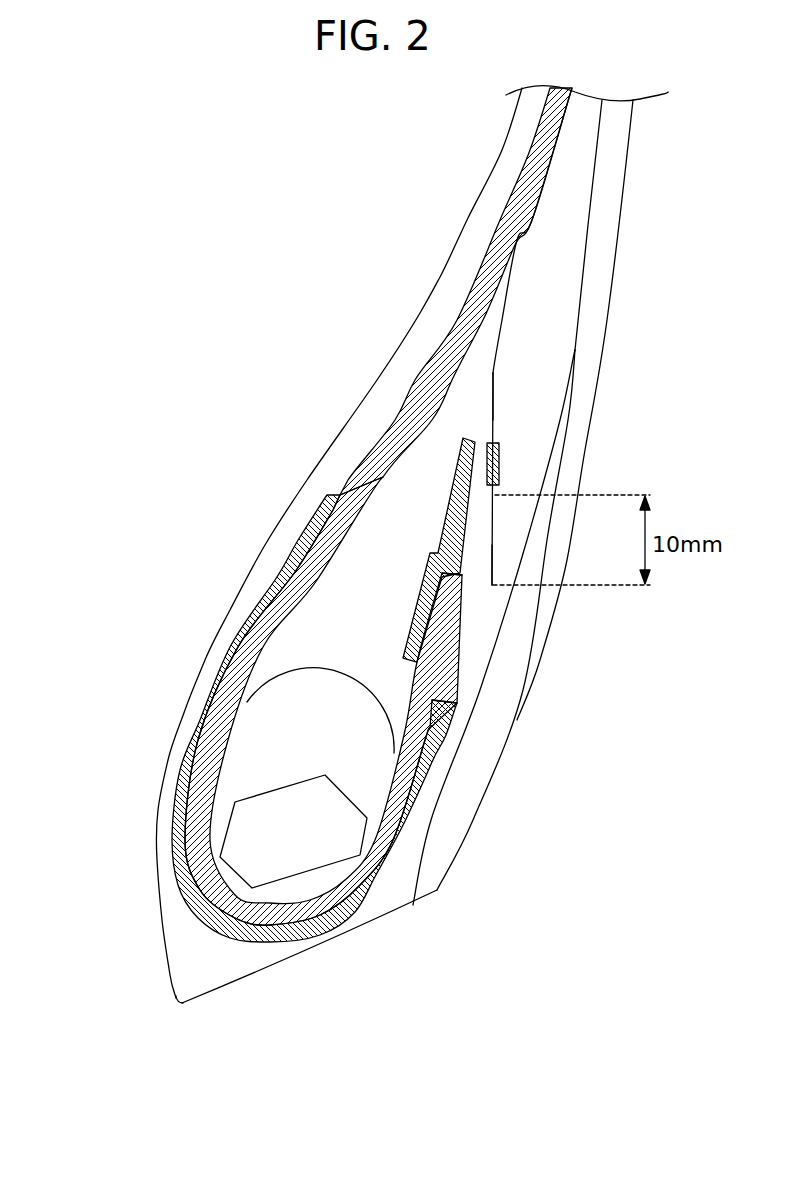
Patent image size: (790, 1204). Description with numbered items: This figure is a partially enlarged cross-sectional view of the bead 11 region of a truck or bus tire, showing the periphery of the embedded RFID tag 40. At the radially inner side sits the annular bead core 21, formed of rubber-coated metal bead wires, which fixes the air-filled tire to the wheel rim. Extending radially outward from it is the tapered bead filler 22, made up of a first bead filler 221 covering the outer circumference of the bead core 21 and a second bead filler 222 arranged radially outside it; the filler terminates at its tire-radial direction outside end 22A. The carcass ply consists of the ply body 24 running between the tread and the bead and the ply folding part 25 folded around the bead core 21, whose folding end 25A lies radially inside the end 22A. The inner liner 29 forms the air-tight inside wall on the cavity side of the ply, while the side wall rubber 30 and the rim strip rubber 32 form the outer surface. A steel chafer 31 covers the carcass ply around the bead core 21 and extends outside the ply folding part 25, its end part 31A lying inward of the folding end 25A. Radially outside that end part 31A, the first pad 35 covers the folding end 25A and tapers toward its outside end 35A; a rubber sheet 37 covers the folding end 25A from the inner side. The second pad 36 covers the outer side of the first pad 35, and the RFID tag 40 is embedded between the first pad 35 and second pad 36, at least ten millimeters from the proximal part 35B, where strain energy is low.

The bead 11 is at (605, 778).
The bead core 21 is at (263, 835).
The bead filler 22 is at (72, 600).
The tire-radial direction outside end of the bead filler 22A is at (517, 237).
The first bead filler 221 is at (282, 725).
The second bead filler 222 is at (325, 633).
The ply body 24 is at (535, 150).
The ply folding part 25 is at (387, 825).
The folding end 25A is at (455, 573).
The inner liner 29 is at (460, 262).
The side wall rubber 30 is at (600, 250).
The steel chafer 31 is at (307, 935).
The end part of the steel chafer 31A is at (433, 698).
The rim strip rubber 32 is at (198, 985).
The first pad 35 is at (477, 528).
The tire-radial direction outside end of the first pad 35A is at (493, 373).
The proximal part 35B is at (465, 578).
The second pad 36 is at (558, 385).
The rubber sheet 37 is at (468, 442).
The RFID tag 40 is at (499, 465).